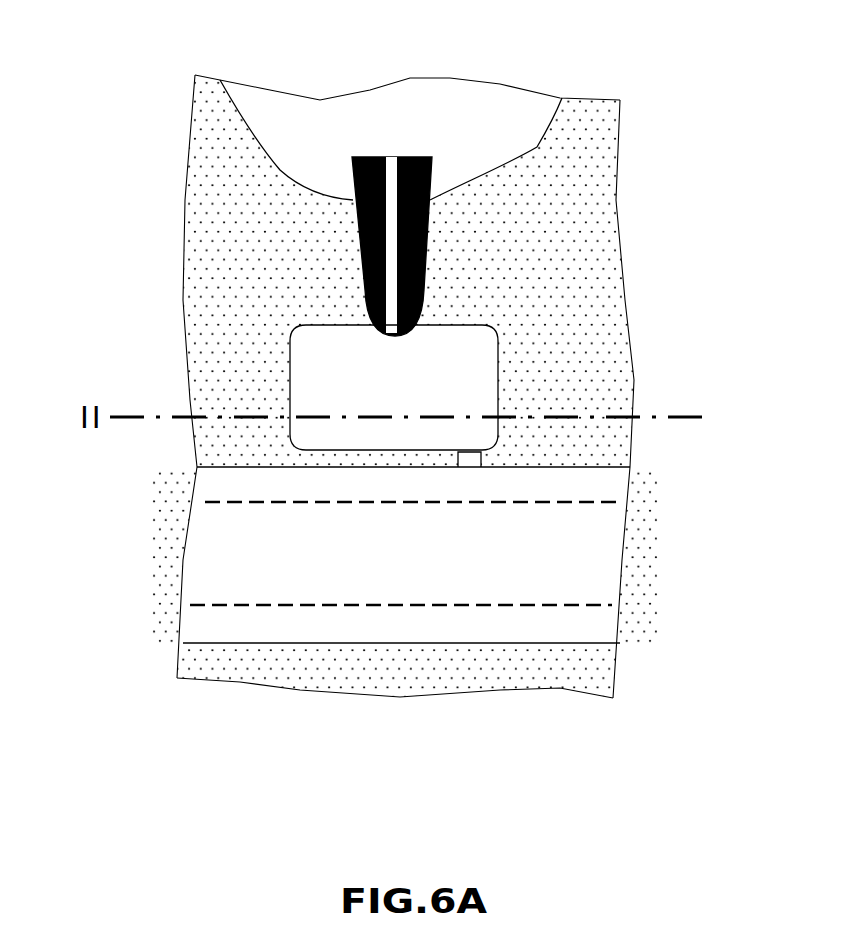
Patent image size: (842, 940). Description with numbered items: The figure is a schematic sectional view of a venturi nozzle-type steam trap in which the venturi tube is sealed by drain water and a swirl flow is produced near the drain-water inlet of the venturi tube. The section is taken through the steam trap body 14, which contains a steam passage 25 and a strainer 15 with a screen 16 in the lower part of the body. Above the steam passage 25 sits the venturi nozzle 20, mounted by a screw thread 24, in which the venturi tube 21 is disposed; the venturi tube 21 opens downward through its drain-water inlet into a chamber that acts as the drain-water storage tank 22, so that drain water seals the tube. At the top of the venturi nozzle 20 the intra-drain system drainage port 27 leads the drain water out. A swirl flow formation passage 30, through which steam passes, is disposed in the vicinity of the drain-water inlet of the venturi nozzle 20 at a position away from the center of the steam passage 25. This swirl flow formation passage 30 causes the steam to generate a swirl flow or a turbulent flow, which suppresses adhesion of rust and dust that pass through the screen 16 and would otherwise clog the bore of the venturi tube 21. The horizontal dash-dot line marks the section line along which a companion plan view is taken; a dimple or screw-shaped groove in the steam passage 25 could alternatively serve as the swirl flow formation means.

The steam trap body 14 is at (234, 689).
The strainer 15 is at (406, 652).
The screen 16 is at (467, 611).
The venturi nozzle 20 is at (357, 292).
The venturi tube 21 is at (393, 340).
The drain-water storage tank 22 is at (481, 178).
The screw thread 24 is at (434, 242).
The steam passage 25 is at (503, 349).
The intra-drain system drainage port 27 is at (392, 150).
The swirl flow formation passage 30 is at (488, 459).